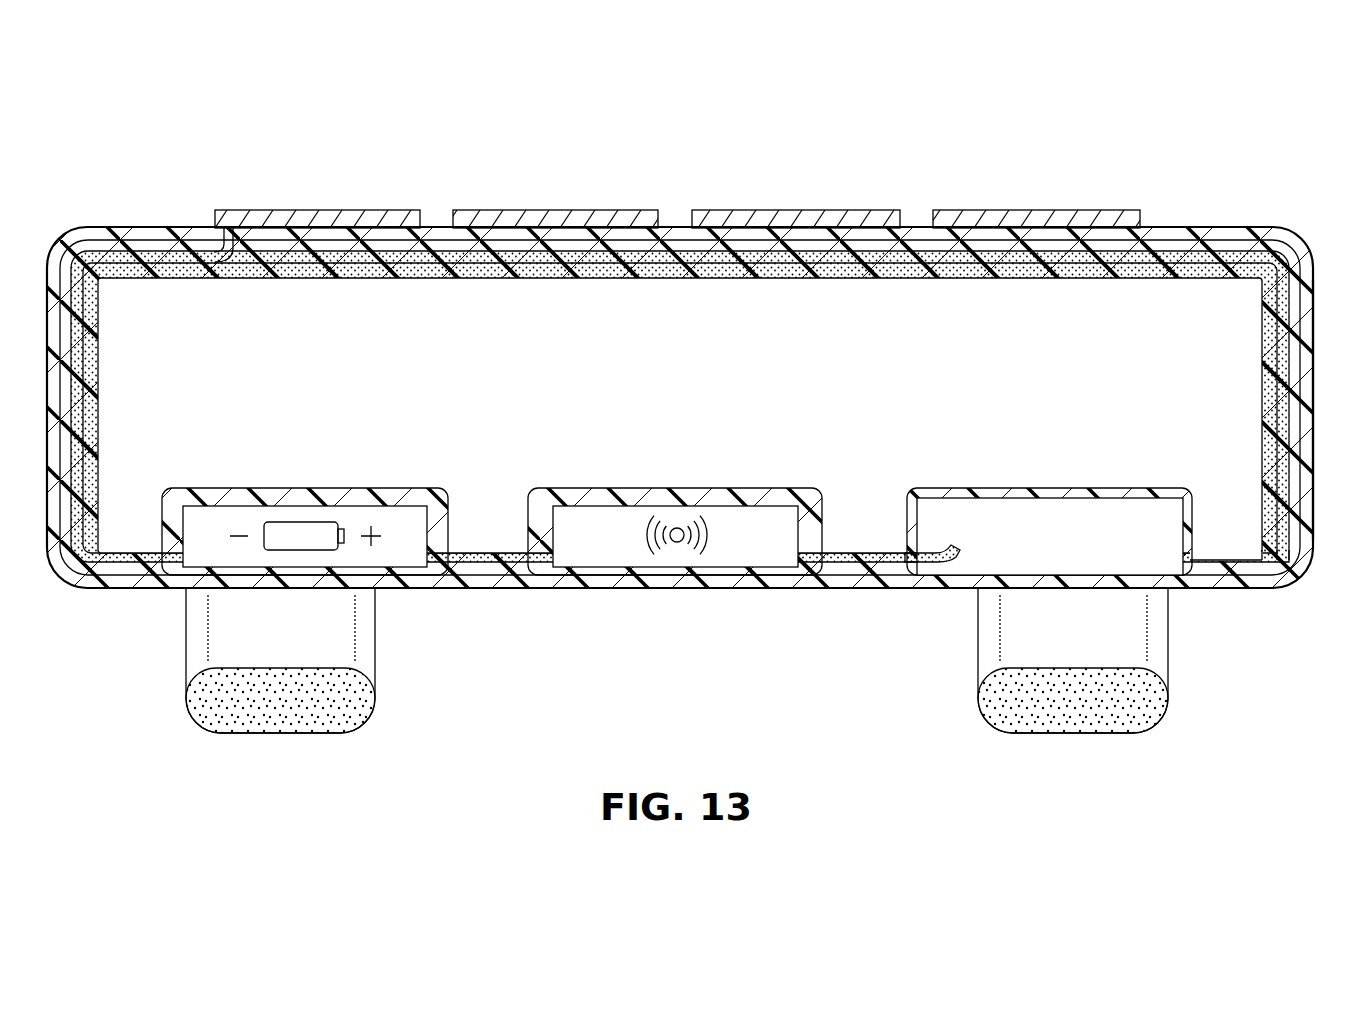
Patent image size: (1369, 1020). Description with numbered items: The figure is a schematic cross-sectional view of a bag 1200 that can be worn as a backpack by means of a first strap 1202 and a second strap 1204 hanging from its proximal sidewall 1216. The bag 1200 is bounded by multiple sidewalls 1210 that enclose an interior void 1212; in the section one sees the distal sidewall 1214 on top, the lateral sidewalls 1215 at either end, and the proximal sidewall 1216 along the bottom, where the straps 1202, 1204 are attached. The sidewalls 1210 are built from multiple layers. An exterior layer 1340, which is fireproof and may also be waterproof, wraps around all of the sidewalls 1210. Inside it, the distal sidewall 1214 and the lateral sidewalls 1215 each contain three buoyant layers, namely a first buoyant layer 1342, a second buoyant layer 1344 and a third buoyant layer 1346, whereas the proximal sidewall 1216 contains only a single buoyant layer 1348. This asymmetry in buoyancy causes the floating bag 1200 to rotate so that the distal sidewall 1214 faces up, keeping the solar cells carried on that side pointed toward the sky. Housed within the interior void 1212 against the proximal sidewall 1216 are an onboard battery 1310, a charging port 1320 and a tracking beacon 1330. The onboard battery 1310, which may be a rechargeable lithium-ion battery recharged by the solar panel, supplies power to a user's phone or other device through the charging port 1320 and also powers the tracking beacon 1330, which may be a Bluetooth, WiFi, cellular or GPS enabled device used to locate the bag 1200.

The bag 1200 is at (518, 135).
The sidewalls 1210 is at (146, 216).
The interior void 1212 is at (1168, 298).
The distal sidewall 1214 is at (177, 226).
The lateral sidewalls 1215 is at (1318, 468).
The proximal sidewall 1216 is at (705, 590).
The first strap 1202 is at (377, 650).
The second strap 1204 is at (978, 648).
The onboard battery 1310 is at (300, 505).
The charging port 1320 is at (947, 548).
The tracking beacon 1330 is at (715, 505).
The exterior layer 1340 is at (1160, 236).
The first buoyant layer 1342 is at (1287, 328).
The second buoyant layer 1344 is at (1268, 400).
The third buoyant layer 1346 is at (1292, 472).
The single buoyant layer 1348 is at (1220, 568).